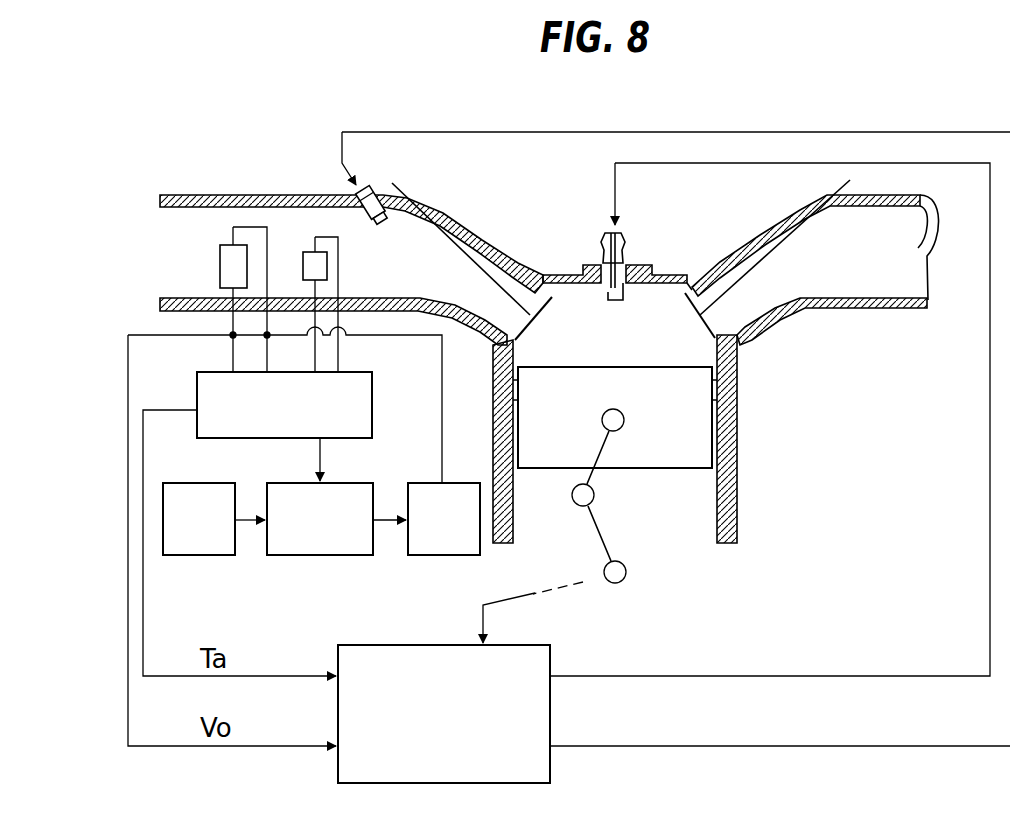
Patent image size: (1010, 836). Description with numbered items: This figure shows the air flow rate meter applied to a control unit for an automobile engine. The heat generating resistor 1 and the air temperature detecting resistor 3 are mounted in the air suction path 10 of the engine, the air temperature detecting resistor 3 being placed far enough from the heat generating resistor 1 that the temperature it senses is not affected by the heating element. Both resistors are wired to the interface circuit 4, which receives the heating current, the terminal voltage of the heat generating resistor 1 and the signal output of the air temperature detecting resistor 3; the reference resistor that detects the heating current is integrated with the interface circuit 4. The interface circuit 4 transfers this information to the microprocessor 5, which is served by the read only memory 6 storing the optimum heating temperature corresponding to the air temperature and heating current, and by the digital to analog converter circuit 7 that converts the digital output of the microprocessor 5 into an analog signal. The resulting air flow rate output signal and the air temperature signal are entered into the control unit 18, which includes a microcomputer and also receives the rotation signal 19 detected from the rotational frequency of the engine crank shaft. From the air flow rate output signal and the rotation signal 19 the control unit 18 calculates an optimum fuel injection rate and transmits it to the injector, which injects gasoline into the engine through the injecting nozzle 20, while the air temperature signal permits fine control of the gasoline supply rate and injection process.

The heat generating resistor 1 is at (231, 243).
The air temperature detecting resistor 3 is at (308, 250).
The interface circuit 4 is at (365, 372).
The microprocessor 5 is at (340, 483).
The read only memory (ROM) 6 is at (218, 483).
The digital to analog converter circuit 7 is at (460, 483).
The air suction path 10 is at (198, 195).
The control unit 18 is at (400, 645).
The rotation signal 19 is at (590, 592).
The injecting nozzle 20 is at (372, 185).